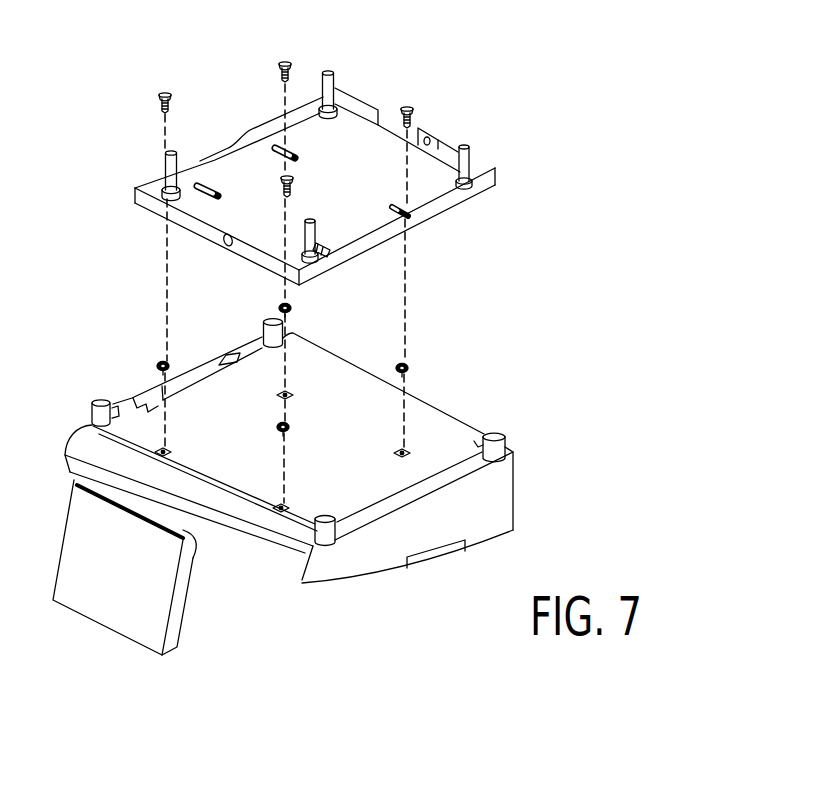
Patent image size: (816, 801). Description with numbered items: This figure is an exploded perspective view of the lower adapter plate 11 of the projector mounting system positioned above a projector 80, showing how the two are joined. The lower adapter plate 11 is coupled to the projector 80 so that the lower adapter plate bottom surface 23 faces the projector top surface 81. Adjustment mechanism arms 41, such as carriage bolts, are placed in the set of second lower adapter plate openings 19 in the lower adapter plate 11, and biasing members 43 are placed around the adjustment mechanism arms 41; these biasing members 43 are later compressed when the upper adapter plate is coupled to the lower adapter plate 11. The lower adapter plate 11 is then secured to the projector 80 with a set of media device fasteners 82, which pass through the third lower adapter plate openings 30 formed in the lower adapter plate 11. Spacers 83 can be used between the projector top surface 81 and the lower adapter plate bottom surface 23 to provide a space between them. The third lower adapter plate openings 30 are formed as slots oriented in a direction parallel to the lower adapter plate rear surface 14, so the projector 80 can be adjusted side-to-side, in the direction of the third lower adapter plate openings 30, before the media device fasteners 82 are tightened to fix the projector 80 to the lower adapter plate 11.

The lower adapter plate 11 is at (370, 104).
The lower adapter plate rear surface 14 is at (430, 138).
The second lower adapter plate openings 19 is at (318, 112).
The lower adapter plate bottom surface 23 is at (438, 222).
The third lower adapter plate openings 30 is at (395, 210).
The adjustment mechanism arm 41 is at (465, 147).
The biasing member 43 is at (333, 84).
The projector 80 is at (480, 502).
The projector top surface 81 is at (453, 432).
The media device fasteners 82 is at (165, 92).
The spacers 83 is at (160, 363).